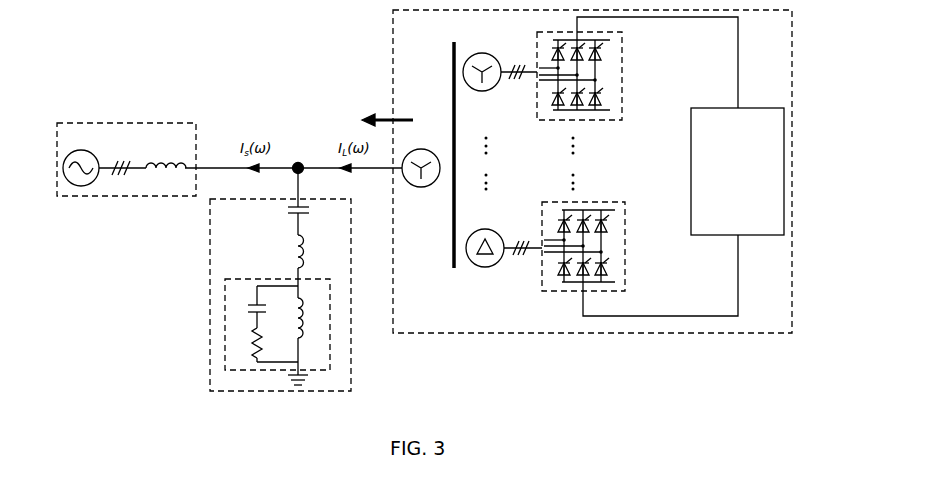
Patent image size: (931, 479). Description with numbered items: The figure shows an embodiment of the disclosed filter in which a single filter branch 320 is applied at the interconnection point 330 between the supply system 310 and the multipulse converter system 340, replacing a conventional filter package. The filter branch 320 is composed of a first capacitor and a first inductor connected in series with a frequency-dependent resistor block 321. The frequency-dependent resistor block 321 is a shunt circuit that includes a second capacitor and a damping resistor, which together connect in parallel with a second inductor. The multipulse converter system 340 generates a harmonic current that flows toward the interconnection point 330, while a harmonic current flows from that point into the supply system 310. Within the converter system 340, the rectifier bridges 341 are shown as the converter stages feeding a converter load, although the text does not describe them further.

The supply system 310 is at (165, 117).
The filter branch 320 is at (202, 380).
The frequency-dependent resistor block 321 is at (250, 277).
The interconnection point 330 is at (320, 139).
The multipulse converter system 340 is at (672, 337).
The thyristor rectifier bridge 341 is at (630, 53).